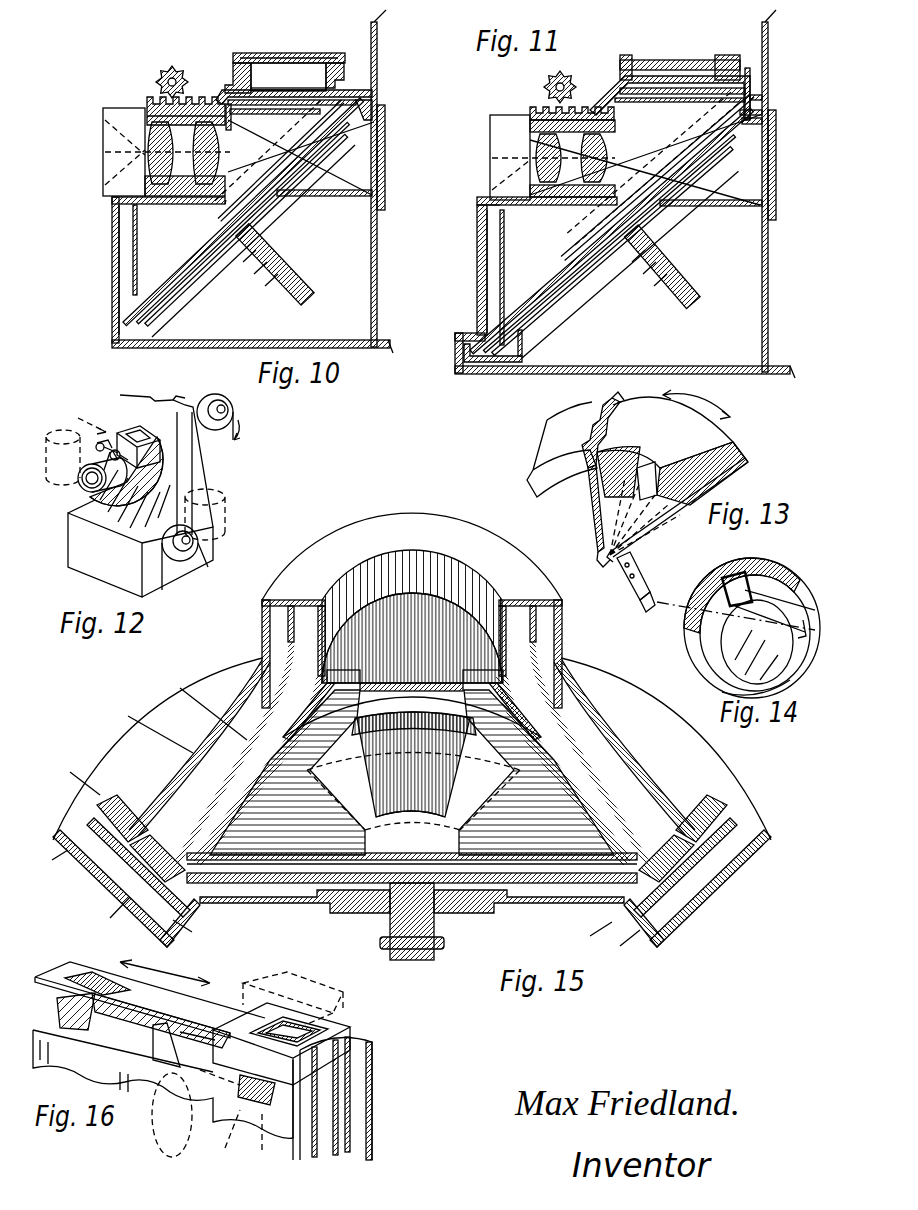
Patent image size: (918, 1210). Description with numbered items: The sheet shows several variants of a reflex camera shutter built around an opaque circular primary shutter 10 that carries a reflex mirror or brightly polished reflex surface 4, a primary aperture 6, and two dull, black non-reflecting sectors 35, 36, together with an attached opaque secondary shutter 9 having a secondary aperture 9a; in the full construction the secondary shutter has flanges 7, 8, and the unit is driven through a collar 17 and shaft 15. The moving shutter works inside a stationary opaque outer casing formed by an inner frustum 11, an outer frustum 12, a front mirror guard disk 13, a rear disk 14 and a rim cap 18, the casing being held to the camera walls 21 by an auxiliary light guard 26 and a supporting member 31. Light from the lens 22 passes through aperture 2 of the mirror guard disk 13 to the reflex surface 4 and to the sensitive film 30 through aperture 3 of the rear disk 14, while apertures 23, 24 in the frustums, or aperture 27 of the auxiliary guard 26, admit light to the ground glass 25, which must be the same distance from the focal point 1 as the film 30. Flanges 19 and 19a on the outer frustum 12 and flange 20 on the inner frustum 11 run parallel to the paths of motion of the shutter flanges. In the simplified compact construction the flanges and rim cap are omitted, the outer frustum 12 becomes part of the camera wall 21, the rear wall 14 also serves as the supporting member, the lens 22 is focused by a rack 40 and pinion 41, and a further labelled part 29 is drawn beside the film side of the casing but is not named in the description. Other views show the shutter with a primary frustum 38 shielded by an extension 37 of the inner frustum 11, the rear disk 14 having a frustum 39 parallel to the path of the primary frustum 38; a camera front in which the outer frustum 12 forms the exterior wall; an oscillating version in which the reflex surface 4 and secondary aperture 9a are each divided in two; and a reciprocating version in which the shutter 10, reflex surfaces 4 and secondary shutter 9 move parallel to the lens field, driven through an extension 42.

In FIG. 16, the focal point 1 is at (242, 1081).
In FIG. 10, the aperture 2 is at (292, 132).
In FIG. 11, the aperture 2 is at (686, 140).
In FIG. 15, the aperture 2 is at (411, 820).
In FIG. 16, the aperture 2 is at (220, 1118).
In FIG. 10, the aperture 3 is at (287, 158).
In FIG. 11, the aperture 3 is at (704, 160).
In FIG. 10, the reflex mirror 4 is at (150, 292).
In FIG. 11, the reflex mirror 4 is at (548, 278).
In FIG. 13, the reflex mirror 4 is at (608, 487).
In FIG. 14, the reflex mirror 4 is at (707, 653).
In FIG. 16, the reflex mirror 4 is at (62, 1006).
In FIG. 10, the primary aperture 6 is at (300, 130).
In FIG. 11, the primary aperture 6 is at (690, 178).
In FIG. 13, the primary aperture 6 is at (647, 481).
In FIG. 14, the primary aperture 6 is at (768, 602).
In FIG. 15, the primary aperture 6 is at (450, 771).
In FIG. 16, the primary aperture 6 is at (167, 1045).
In FIG. 15, the flange 7 is at (53, 861).
In FIG. 15, the flange 8 is at (265, 622).
In FIG. 10, the secondary shutter 9 is at (306, 100).
In FIG. 11, the secondary shutter 9 is at (652, 88).
In FIG. 13, the secondary shutter 9 is at (672, 432).
In FIG. 14, the secondary shutter 9 is at (752, 628).
In FIG. 15, the secondary shutter 9 is at (362, 600).
In FIG. 16, the secondary shutter 9 is at (383, 1057).
In FIG. 10, the secondary aperture 9a is at (120, 268).
In FIG. 11, the secondary aperture 9a is at (491, 251).
In FIG. 13, the secondary aperture 9a is at (612, 395).
In FIG. 16, the secondary aperture 9a is at (85, 967).
In FIG. 10, the primary shutter 10 is at (165, 301).
In FIG. 11, the primary shutter 10 is at (600, 268).
In FIG. 13, the primary shutter 10 is at (660, 522).
In FIG. 15, the primary shutter 10 is at (470, 721).
In FIG. 16, the primary shutter 10 is at (346, 1096).
In FIG. 10, the inner frustum 11 is at (236, 118).
In FIG. 11, the inner frustum 11 is at (631, 98).
In FIG. 13, the inner frustum 11 is at (600, 412).
In FIG. 15, the inner frustum 11 is at (198, 704).
In FIG. 16, the inner frustum 11 is at (358, 1080).
In FIG. 10, the outer frustum 12 is at (361, 90).
In FIG. 11, the outer frustum 12 is at (613, 81).
In FIG. 12, the outer frustum 12 is at (130, 482).
In FIG. 13, the outer frustum 12 is at (562, 436).
In FIG. 15, the outer frustum 12 is at (145, 728).
In FIG. 16, the outer frustum 12 is at (368, 1039).
In FIG. 10, the front mirror guard disk 13 is at (176, 279).
In FIG. 11, the front mirror guard disk 13 is at (590, 248).
In FIG. 13, the front mirror guard disk 13 is at (583, 532).
In FIG. 15, the front mirror guard disk 13 is at (416, 792).
In FIG. 16, the front mirror guard disk 13 is at (270, 1098).
In FIG. 10, the rear disk 14 is at (198, 261).
In FIG. 11, the rear disk 14 is at (564, 300).
In FIG. 13, the rear disk 14 is at (640, 415).
In FIG. 15, the rear disk 14 is at (290, 900).
In FIG. 16, the rear disk 14 is at (328, 1122).
In FIG. 13, the shaft 15 is at (640, 597).
In FIG. 14, the shaft 15 is at (806, 618).
In FIG. 13, the collar 17 is at (622, 576).
In FIG. 15, the collar 17 is at (390, 930).
In FIG. 13, the rim cap 18 is at (533, 490).
In FIG. 15, the rim cap 18 is at (345, 600).
In FIG. 15, the flange 19 is at (262, 641).
In FIG. 15, the flange 19a is at (64, 778).
In FIG. 15, the flange 20 is at (540, 648).
In FIG. 10, the walls 21 is at (262, 338).
In FIG. 11, the walls 21 is at (762, 52).
In FIG. 12, the walls 21 is at (73, 542).
In FIG. 10, the lens 22 is at (166, 152).
In FIG. 11, the lens 22 is at (552, 157).
In FIG. 12, the lens 22 is at (82, 490).
In FIG. 16, the lens 22 is at (172, 1115).
In FIG. 10, the aperture 23 is at (274, 113).
In FIG. 15, the aperture 23 is at (322, 600).
In FIG. 10, the aperture 24 is at (270, 94).
In FIG. 15, the aperture 24 is at (437, 660).
In FIG. 16, the aperture 24 is at (248, 1030).
In FIG. 10, the ground glass 25 is at (266, 53).
In FIG. 12, the ground glass 25 is at (138, 438).
In FIG. 16, the ground glass 25 is at (293, 998).
In FIG. 10, the auxiliary light guard 26 is at (236, 80).
In FIG. 12, the auxiliary light guard 26 is at (172, 410).
In FIG. 10, the aperture 27 is at (297, 66).
In FIG. 10, the shelf 29 is at (380, 130).
In FIG. 11, the shelf 29 is at (768, 205).
In FIG. 10, the sensitive film 30 is at (390, 158).
In FIG. 11, the sensitive film 30 is at (776, 175).
In FIG. 12, the sensitive film 30 is at (210, 462).
In FIG. 11, the supporting member 31 is at (762, 268).
In FIG. 13, the non-reflecting sector 35 is at (600, 557).
In FIG. 16, the non-reflecting sector 35 is at (163, 1082).
In FIG. 13, the non-reflecting sector 36 is at (647, 530).
In FIG. 16, the non-reflecting sector 36 is at (198, 1054).
In FIG. 11, the extension 37 is at (762, 104).
In FIG. 15, the extension 37 is at (100, 880).
In FIG. 11, the primary frustum 38 is at (762, 118).
In FIG. 14, the primary frustum 38 is at (757, 663).
In FIG. 15, the primary frustum 38 is at (361, 927).
In FIG. 11, the frustum 39 is at (762, 126).
In FIG. 15, the frustum 39 is at (392, 933).
In FIG. 10, the rack 40 is at (150, 100).
In FIG. 11, the rack 40 is at (533, 112).
In FIG. 12, the rack 40 is at (82, 427).
In FIG. 10, the pinion 41 is at (168, 68).
In FIG. 11, the pinion 41 is at (548, 83).
In FIG. 12, the pinion 41 is at (113, 446).
In FIG. 16, the extension 42 is at (318, 1152).